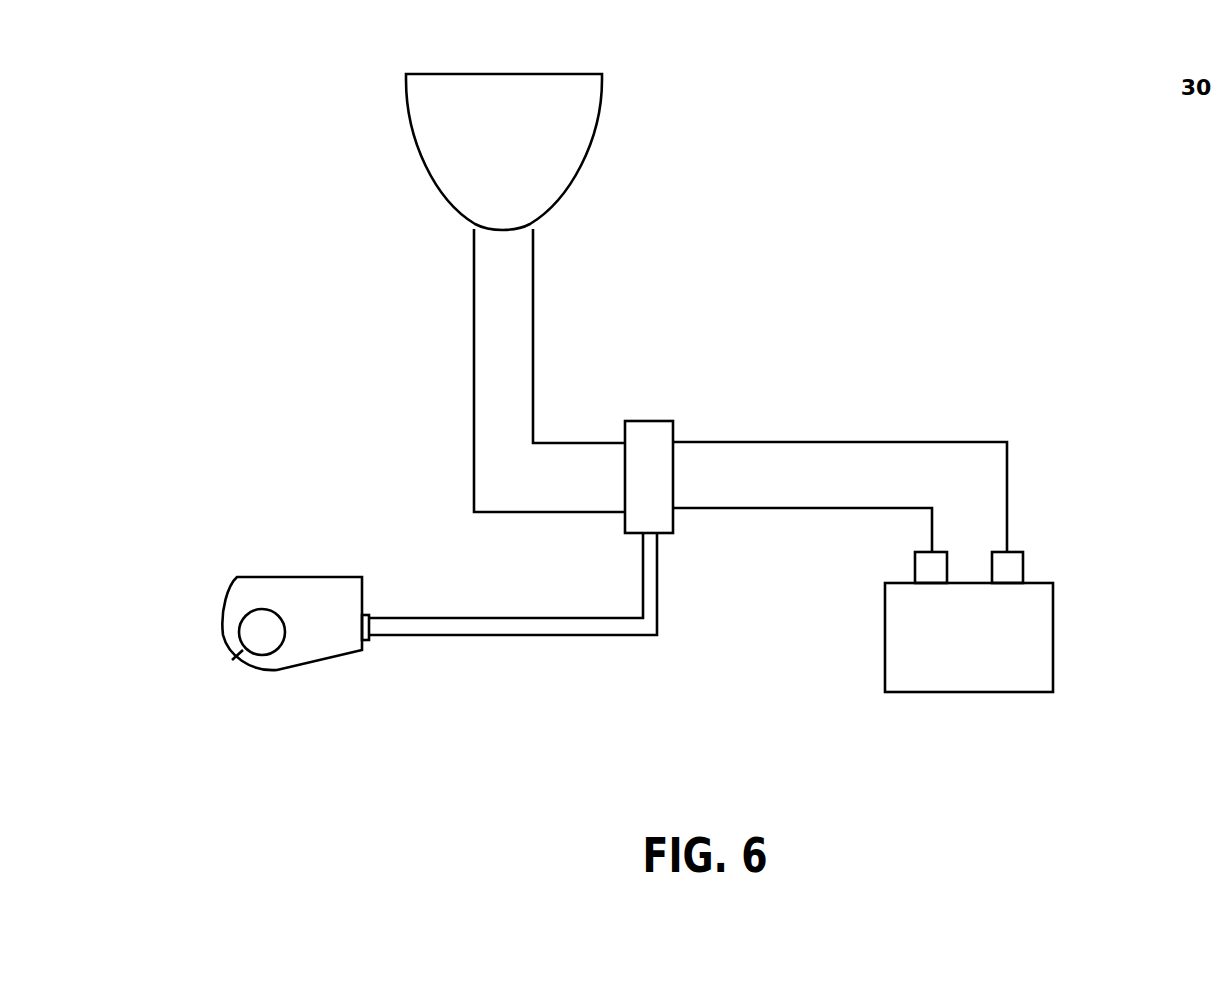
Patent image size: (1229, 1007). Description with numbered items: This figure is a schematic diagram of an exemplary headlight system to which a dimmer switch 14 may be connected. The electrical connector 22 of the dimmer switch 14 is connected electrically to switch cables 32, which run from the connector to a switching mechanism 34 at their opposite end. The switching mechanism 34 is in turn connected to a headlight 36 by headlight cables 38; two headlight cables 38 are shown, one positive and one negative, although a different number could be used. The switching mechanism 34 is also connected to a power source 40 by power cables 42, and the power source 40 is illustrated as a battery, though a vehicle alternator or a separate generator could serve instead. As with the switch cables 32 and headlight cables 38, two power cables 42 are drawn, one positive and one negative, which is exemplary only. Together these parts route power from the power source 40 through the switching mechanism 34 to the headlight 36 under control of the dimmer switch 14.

The headlight 36 is at (433, 183).
The headlight cables 38 is at (533, 383).
The switching mechanism 34 is at (658, 417).
The power cables 42 is at (808, 503).
The power source 40 is at (1058, 618).
The dimmer switch 14 is at (253, 607).
The electrical connector 22 is at (366, 642).
The switch cables 32 is at (485, 620).